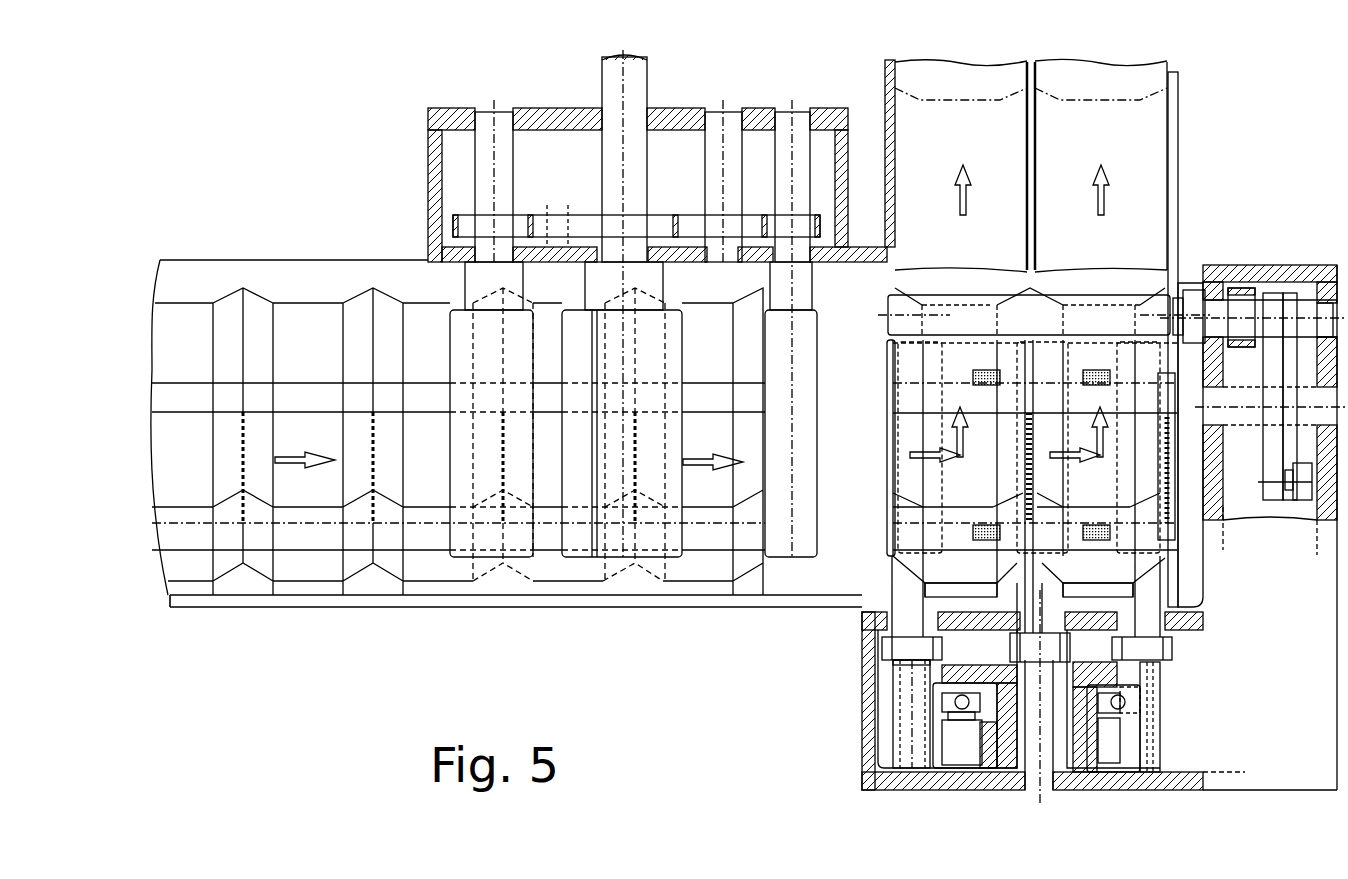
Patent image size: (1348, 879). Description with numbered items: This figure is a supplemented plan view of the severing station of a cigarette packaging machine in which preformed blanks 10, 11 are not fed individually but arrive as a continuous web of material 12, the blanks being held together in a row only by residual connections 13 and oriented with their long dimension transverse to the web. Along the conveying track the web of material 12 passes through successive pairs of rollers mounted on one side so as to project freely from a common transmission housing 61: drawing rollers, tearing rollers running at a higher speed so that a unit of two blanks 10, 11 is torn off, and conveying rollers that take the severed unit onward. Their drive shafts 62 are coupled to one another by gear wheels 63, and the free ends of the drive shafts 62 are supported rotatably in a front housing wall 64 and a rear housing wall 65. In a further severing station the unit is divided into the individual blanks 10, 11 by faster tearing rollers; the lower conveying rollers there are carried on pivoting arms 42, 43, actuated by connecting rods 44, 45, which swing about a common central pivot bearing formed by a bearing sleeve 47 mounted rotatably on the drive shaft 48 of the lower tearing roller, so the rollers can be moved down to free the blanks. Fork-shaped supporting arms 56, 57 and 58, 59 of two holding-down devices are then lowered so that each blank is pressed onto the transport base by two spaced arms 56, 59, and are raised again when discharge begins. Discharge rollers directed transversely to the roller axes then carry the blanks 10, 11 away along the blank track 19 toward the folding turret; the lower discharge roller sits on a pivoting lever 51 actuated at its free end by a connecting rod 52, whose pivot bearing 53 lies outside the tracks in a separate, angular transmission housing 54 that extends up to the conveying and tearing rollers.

The blank 10 is at (438, 451).
The blank 11 is at (313, 451).
The web of material 12 is at (243, 577).
The residual connections 13 is at (373, 472).
The blank track 19 is at (1183, 104).
The pivoting arm 42 is at (955, 670).
The pivoting arm 43 is at (967, 745).
The connecting rod 44 is at (950, 702).
The connecting rod 45 is at (1110, 703).
The bearing sleeve 47 is at (1013, 757).
The drive shaft 48 is at (1043, 753).
The pivoting lever 51 is at (1270, 450).
The connecting rod 52 is at (1300, 497).
The pivot bearing 53 is at (1297, 400).
The transmission housing 54 is at (1230, 273).
The supporting arm 56 is at (985, 370).
The supporting arm 57 is at (1092, 370).
The supporting arm 58 is at (905, 565).
The supporting arm 59 is at (1160, 538).
The transmission housing 61 is at (433, 158).
The drive shafts 62 is at (482, 150).
The gear wheels 63 is at (473, 220).
The front housing wall 64 is at (450, 250).
The rear housing wall 65 is at (688, 112).